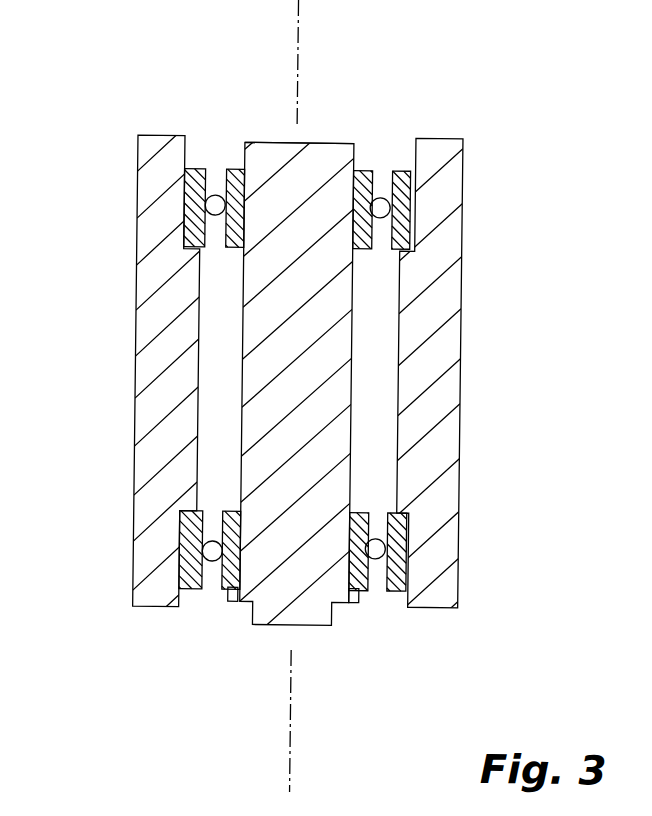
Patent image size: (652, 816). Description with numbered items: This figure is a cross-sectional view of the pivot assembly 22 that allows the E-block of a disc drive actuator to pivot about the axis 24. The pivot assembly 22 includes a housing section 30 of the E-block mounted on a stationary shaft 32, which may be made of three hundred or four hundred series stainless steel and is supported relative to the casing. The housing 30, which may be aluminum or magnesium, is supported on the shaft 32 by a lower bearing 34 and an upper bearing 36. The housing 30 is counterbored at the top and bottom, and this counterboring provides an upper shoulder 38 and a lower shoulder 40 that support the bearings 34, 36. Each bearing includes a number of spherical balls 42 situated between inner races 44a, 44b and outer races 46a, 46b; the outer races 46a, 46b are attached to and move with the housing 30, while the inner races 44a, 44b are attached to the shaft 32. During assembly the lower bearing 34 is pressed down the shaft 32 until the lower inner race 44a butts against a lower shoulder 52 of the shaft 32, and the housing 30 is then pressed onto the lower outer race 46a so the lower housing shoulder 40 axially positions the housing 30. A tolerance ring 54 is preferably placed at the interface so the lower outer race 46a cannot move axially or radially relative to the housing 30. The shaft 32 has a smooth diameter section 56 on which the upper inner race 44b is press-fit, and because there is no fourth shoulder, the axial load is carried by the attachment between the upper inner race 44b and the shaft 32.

The pivot assembly 22 is at (536, 354).
The axis 24 is at (300, 8).
The housing section 30 is at (158, 312).
The shaft 32 is at (313, 167).
The lower bearing 34 is at (200, 616).
The upper bearing 36 is at (393, 140).
The upper shoulder 38 is at (415, 273).
The lower shoulder 40 is at (399, 505).
The spherical balls 42 is at (213, 196).
The lower inner race 44a is at (363, 592).
The upper inner race 44b is at (234, 170).
The lower outer race 46a is at (399, 592).
The upper outer race 46b is at (193, 172).
The lower shoulder of the shaft 52 is at (352, 604).
The tolerance ring 54 is at (181, 200).
The smooth diameter section 56 is at (259, 180).